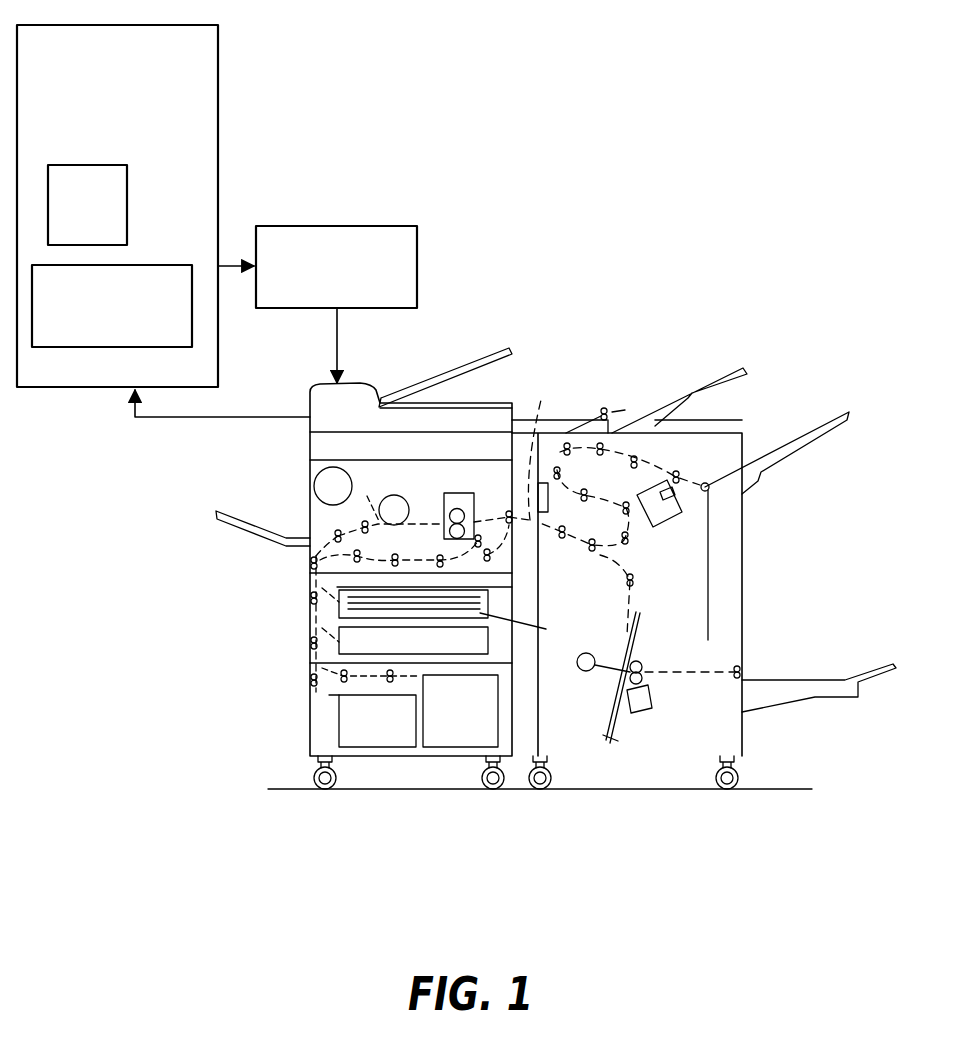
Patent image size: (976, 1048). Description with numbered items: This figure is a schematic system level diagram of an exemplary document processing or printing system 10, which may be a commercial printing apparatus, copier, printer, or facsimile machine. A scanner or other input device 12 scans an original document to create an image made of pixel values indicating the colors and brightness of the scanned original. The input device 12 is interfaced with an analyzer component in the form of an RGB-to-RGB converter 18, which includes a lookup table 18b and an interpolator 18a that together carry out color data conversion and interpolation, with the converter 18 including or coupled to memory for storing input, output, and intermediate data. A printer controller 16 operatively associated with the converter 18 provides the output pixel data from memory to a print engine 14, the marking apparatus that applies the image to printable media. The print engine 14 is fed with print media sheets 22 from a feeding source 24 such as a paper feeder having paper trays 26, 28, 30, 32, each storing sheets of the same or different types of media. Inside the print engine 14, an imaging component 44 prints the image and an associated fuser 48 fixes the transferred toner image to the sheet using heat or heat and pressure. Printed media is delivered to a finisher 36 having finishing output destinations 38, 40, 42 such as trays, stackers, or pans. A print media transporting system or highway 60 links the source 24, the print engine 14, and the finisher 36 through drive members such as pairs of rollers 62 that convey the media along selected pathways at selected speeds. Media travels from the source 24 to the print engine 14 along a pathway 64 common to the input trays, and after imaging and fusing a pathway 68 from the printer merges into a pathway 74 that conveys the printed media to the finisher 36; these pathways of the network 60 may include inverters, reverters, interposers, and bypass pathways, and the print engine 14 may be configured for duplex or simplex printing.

The printing system 10 is at (668, 315).
The input device 12 is at (513, 352).
The print engine 14 is at (314, 503).
The printer controller 16 is at (419, 267).
The RGB-to-RGB converter 18 is at (220, 84).
The interpolator 18a is at (105, 348).
The lookup table 18b is at (128, 205).
The print media sheets 22 is at (526, 627).
The feeding source 24 is at (291, 592).
The paper tray 26 is at (339, 608).
The paper tray 28 is at (339, 648).
The paper tray 30 is at (375, 749).
The paper tray 32 is at (455, 749).
The finisher 36 is at (769, 543).
The finishing output destination 38 is at (738, 376).
The finishing output destination 40 is at (806, 440).
The finishing output destination 42 is at (797, 680).
The imaging component 44 is at (399, 495).
The fuser 48 is at (450, 538).
The print media transporting system 60 is at (524, 547).
The pairs of rollers 62 is at (337, 534).
The pathway 64 is at (383, 499).
The pathway 68 is at (494, 504).
The pathway 74 is at (551, 416).